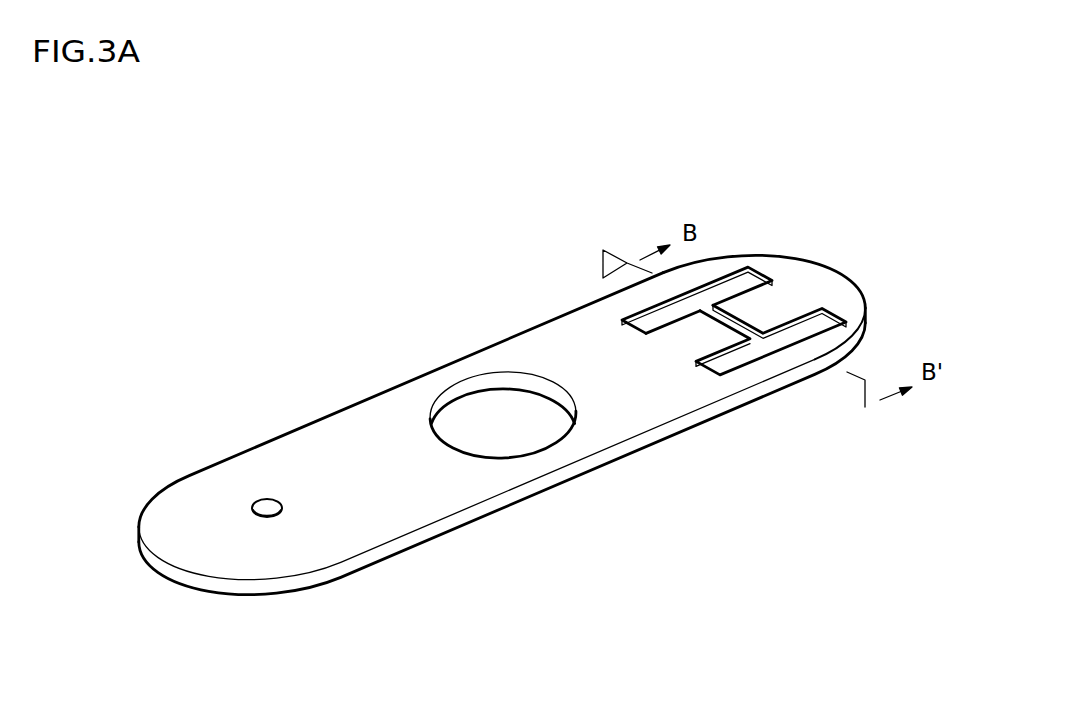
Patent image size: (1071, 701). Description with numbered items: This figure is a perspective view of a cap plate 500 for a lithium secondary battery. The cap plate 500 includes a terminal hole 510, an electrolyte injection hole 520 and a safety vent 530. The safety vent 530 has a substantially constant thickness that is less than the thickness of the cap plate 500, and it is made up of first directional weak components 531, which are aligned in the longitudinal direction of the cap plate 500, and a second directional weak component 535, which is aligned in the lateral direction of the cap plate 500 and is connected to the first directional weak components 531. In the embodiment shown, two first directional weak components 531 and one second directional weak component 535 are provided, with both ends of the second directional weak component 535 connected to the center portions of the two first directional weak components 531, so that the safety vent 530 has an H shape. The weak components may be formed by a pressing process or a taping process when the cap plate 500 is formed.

The cap plate 500 is at (385, 497).
The terminal hole 510 is at (495, 408).
The electrolyte injection hole 520 is at (267, 508).
The safety vent 530 is at (752, 255).
The first directional weak component 531 is at (725, 292).
The second directional weak component 535 is at (746, 327).